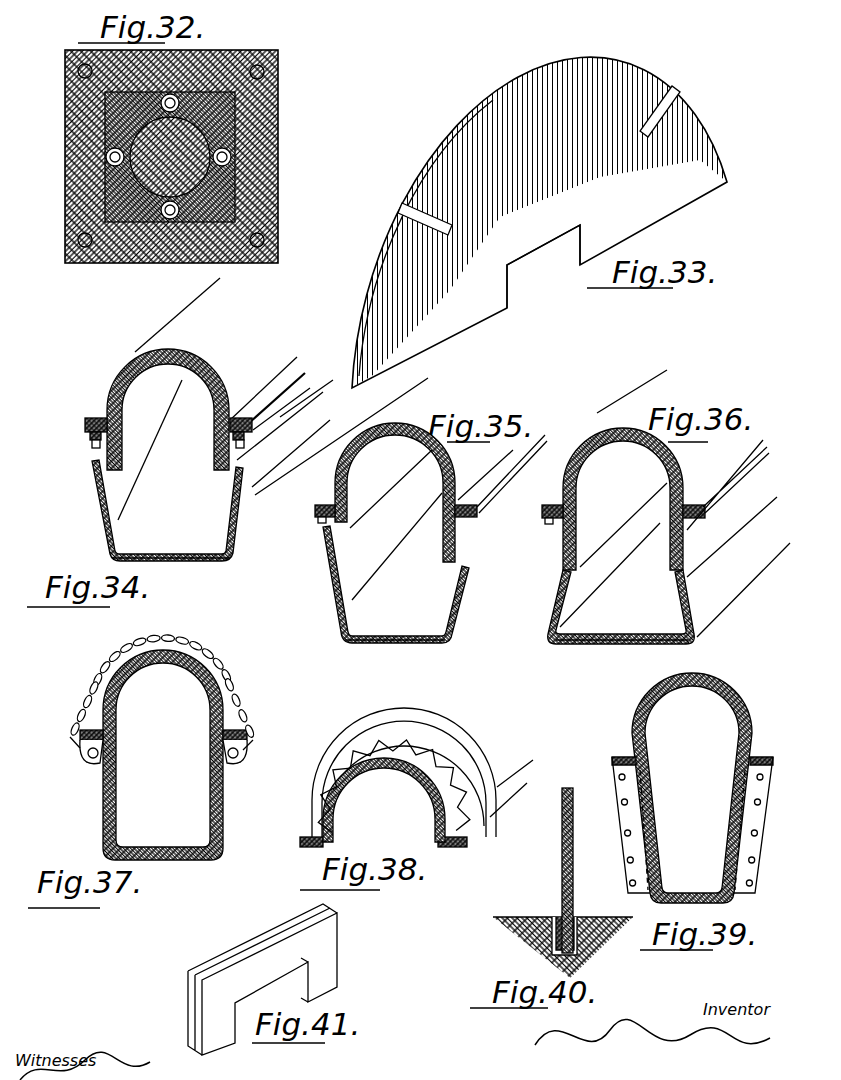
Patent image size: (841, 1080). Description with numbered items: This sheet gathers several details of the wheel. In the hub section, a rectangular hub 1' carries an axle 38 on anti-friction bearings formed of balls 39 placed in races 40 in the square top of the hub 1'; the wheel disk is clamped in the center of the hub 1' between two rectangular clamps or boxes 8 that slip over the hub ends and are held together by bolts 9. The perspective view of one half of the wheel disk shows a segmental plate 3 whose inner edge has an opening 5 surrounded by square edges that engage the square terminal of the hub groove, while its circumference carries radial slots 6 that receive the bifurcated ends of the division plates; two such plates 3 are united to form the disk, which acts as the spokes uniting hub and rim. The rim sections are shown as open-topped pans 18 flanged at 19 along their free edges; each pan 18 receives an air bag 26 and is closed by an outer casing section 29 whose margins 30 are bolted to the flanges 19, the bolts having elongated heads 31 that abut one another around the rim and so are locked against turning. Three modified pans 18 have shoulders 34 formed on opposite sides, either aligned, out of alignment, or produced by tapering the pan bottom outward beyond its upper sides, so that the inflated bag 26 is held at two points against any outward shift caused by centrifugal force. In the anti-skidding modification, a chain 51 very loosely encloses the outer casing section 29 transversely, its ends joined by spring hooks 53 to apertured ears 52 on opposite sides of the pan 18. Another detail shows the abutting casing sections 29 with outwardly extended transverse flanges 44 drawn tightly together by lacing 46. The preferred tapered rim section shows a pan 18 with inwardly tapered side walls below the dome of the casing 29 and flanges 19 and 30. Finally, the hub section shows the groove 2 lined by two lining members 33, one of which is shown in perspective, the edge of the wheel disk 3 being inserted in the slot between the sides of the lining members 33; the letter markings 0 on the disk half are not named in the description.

In FIG. 32, the rectangular clamp or box 8 is at (78, 113).
In FIG. 32, the hub 1' is at (209, 157).
In FIG. 40, the hub 1' is at (563, 947).
In FIG. 32, the axle 38 is at (170, 157).
In FIG. 32, the bolt 9 is at (264, 70).
In FIG. 32, the ball 39 is at (232, 152).
In FIG. 32, the race 40 is at (167, 97).
In FIG. 33, the segmental plate 3 is at (539, 222).
In FIG. 40, the segmental plate 3 is at (573, 858).
In FIG. 33, the radial slot 6 is at (670, 90).
In FIG. 33, the opening 5 is at (543, 266).
In FIG. 33, the opening 0 is at (544, 263).
In FIG. 34, the outer casing section 29 is at (182, 392).
In FIG. 35, the outer casing section 29 is at (375, 408).
In FIG. 36, the outer casing section 29 is at (620, 427).
In FIG. 37, the outer casing section 29 is at (155, 665).
In FIG. 38, the outer casing section 29 is at (447, 673).
In FIG. 39, the outer casing section 29 is at (713, 684).
In FIG. 34, the elongated bolt head 31 is at (283, 380).
In FIG. 34, the air bag 26 is at (180, 373).
In FIG. 35, the air bag 26 is at (397, 452).
In FIG. 36, the air bag 26 is at (617, 450).
In FIG. 37, the air bag 26 is at (195, 682).
In FIG. 39, the air bag 26 is at (700, 707).
In FIG. 34, the casing section margin 30 is at (252, 426).
In FIG. 35, the casing section margin 30 is at (325, 503).
In FIG. 36, the casing section margin 30 is at (547, 503).
In FIG. 37, the casing section margin 30 is at (117, 727).
In FIG. 38, the casing section margin 30 is at (467, 840).
In FIG. 39, the casing section margin 30 is at (623, 757).
In FIG. 34, the pan flange 19 is at (245, 447).
In FIG. 35, the pan flange 19 is at (317, 513).
In FIG. 36, the pan flange 19 is at (545, 517).
In FIG. 37, the pan flange 19 is at (213, 743).
In FIG. 39, the pan flange 19 is at (645, 790).
In FIG. 34, the shoulder 34 is at (98, 462).
In FIG. 35, the shoulder 34 is at (340, 543).
In FIG. 36, the shoulder 34 is at (558, 600).
In FIG. 34, the pan 18 is at (228, 556).
In FIG. 35, the pan 18 is at (342, 638).
In FIG. 36, the pan 18 is at (643, 642).
In FIG. 37, the pan 18 is at (225, 835).
In FIG. 39, the pan 18 is at (680, 893).
In FIG. 37, the chain 51 is at (190, 643).
In FIG. 37, the spring hook 53 is at (78, 750).
In FIG. 37, the apertured ear 52 is at (93, 767).
In FIG. 38, the transverse flange 44 is at (453, 725).
In FIG. 38, the lacing 46 is at (457, 770).
In FIG. 40, the lining member 33 is at (557, 917).
In FIG. 41, the lining member 33 is at (267, 905).
In FIG. 40, the annular groove 2 is at (582, 943).